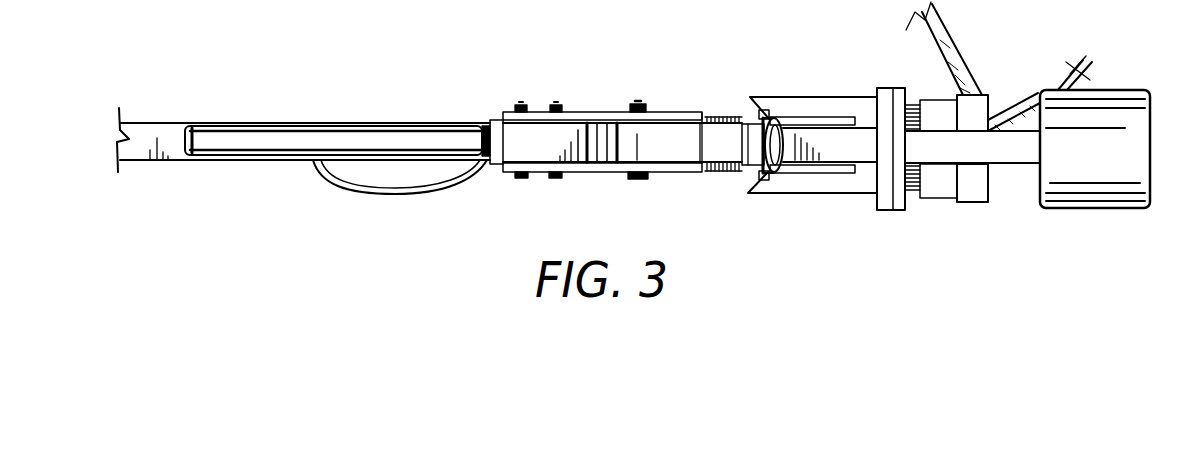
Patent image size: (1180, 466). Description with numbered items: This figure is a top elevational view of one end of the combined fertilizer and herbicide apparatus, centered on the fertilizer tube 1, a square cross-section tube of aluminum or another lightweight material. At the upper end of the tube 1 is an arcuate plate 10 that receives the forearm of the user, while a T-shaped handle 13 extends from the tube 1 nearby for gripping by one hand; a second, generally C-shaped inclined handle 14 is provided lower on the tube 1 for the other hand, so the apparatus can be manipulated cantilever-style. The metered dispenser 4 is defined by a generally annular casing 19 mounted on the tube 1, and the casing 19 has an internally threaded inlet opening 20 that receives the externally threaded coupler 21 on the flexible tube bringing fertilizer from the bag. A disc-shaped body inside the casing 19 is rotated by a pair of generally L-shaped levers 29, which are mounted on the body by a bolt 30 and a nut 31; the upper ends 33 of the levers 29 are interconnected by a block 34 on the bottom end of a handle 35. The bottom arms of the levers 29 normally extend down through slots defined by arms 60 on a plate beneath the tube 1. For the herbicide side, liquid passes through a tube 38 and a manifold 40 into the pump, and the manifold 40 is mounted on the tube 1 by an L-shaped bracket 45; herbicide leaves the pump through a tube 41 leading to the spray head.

The fertilizer tube 1 is at (143, 164).
The handle 35 is at (257, 145).
The inclined handle 14 is at (378, 191).
The block 34 is at (502, 142).
The upper ends of levers 33 is at (503, 165).
The metered dispenser 4 is at (622, 150).
The L-shaped levers 29 is at (580, 118).
The annular casing 19 is at (622, 140).
The nut 31 is at (640, 108).
The bolt 30 is at (637, 179).
The inlet opening 20 is at (723, 152).
The coupler 21 is at (760, 134).
The arms 60 is at (815, 98).
The T-shaped handle 13 is at (882, 100).
The manifold 40 is at (937, 184).
The L-shaped bracket 45 is at (970, 120).
The tube 41 is at (945, 40).
The tube 38 is at (1088, 70).
The arcuate plate 10 is at (1070, 172).